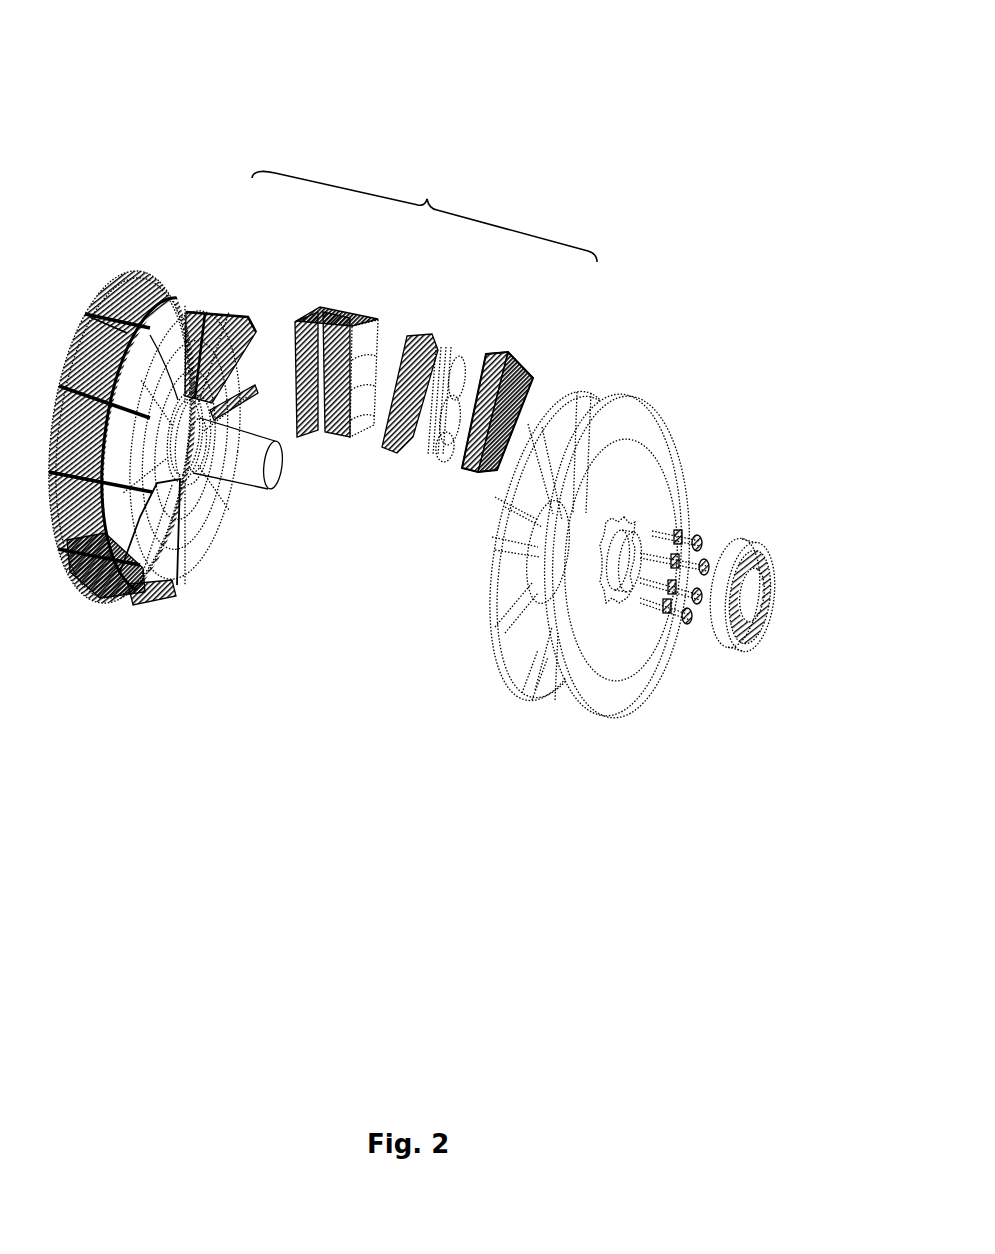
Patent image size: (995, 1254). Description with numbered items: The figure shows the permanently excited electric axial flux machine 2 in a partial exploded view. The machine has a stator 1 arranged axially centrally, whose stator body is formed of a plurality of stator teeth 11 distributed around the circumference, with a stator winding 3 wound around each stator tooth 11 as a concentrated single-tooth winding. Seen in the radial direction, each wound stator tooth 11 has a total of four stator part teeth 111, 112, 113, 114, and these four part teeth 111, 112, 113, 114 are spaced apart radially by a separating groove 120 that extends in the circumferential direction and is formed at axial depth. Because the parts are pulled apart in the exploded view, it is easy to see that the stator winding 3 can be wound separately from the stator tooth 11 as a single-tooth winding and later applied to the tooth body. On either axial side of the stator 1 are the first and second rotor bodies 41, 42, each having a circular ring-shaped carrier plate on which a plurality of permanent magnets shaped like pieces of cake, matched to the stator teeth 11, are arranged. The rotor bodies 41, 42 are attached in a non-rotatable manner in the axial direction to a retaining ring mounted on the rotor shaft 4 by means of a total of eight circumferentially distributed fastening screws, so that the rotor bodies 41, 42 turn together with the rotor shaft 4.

The stator 1 is at (428, 170).
The axial flux machine 2 is at (347, 110).
The stator winding 3 is at (512, 350).
The rotor shaft 4 is at (247, 463).
The stator tooth 11 is at (455, 350).
The first rotor body 41 is at (147, 263).
The second rotor body 42 is at (658, 380).
The stator part tooth 111 is at (450, 358).
The stator part tooth 112 is at (440, 390).
The stator part tooth 113 is at (437, 417).
The stator part tooth 114 is at (430, 453).
The separating groove 120 is at (270, 577).